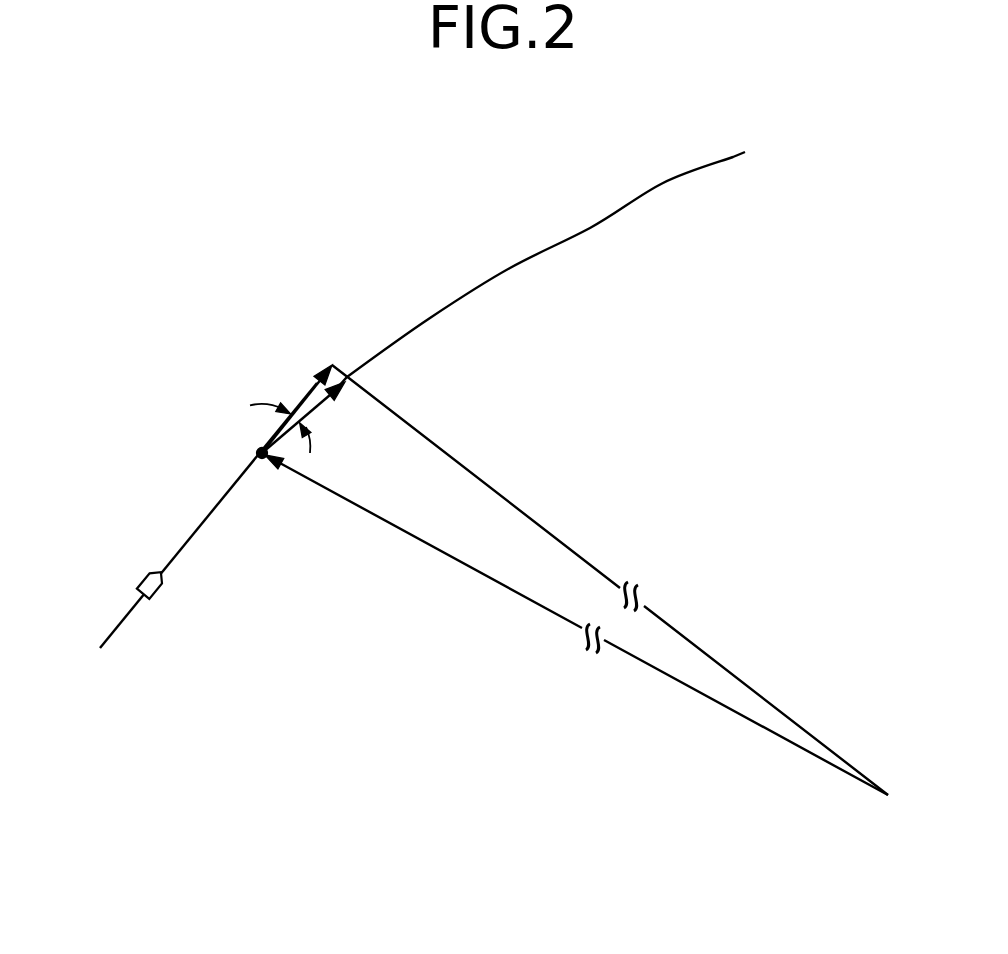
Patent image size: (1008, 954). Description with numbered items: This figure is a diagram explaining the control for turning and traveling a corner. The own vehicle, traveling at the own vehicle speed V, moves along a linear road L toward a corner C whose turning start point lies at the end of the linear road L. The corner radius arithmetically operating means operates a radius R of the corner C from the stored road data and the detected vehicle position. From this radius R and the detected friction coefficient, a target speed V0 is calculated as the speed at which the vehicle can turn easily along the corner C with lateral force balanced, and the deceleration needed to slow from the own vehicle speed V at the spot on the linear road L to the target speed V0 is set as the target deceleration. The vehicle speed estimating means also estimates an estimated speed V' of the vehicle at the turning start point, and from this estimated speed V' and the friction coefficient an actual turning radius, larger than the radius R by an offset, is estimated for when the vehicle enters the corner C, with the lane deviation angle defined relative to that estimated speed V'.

The corner C is at (508, 268).
The linear road L is at (112, 632).
The own vehicle speed V is at (144, 560).
The estimated speed V' is at (297, 389).
The target speed V0 is at (327, 400).
The radius of corner R is at (576, 625).